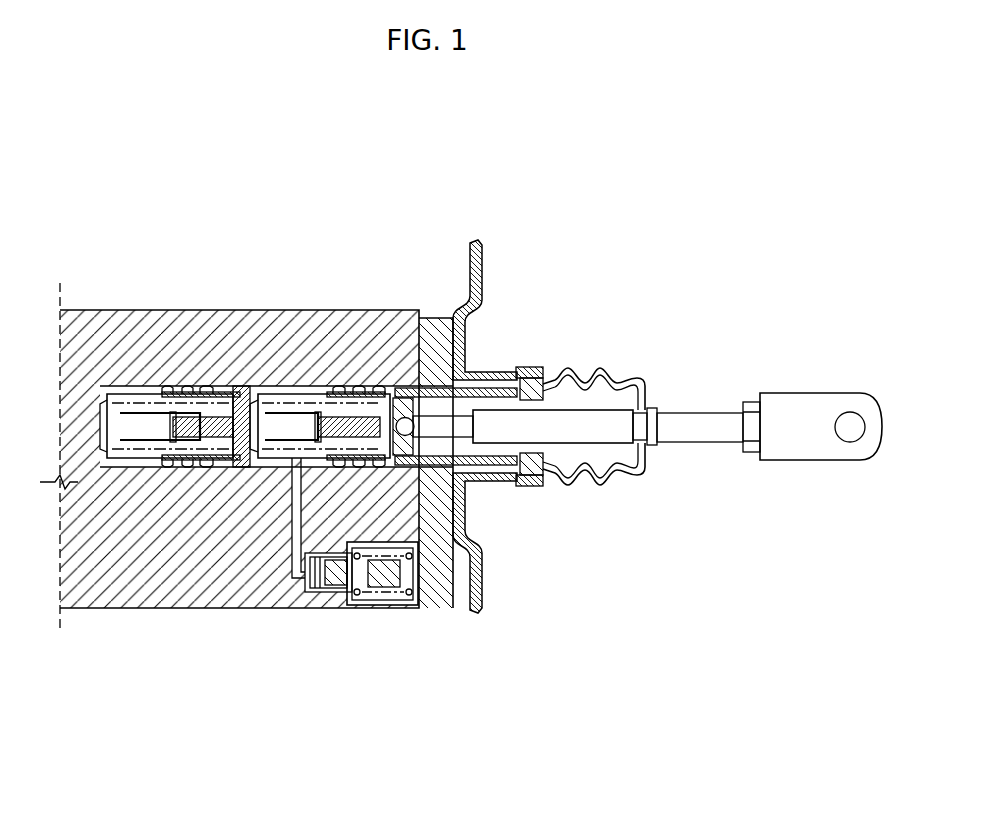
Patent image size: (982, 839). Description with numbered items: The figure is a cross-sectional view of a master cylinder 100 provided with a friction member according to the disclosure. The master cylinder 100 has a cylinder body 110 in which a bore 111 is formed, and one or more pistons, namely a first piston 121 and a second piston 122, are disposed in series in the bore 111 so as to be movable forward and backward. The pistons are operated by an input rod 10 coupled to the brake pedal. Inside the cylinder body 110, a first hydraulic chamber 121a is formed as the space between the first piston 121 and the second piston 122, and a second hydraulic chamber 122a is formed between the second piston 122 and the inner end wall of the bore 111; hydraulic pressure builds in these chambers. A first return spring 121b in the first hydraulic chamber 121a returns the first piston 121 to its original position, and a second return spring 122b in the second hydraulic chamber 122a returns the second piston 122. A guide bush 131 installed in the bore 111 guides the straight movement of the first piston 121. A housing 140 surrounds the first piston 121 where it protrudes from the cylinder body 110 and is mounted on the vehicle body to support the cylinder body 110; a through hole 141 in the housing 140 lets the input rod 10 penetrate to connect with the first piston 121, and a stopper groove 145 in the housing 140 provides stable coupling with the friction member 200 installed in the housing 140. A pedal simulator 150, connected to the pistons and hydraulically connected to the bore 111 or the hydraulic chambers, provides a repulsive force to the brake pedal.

The input rod 10 is at (708, 432).
The master cylinder 100 is at (131, 179).
The cylinder body 110 is at (116, 332).
The bore 111 is at (292, 396).
The first piston 121 is at (372, 394).
The first hydraulic chamber 121a is at (288, 458).
The first return spring 121b is at (247, 463).
The second piston 122 is at (240, 392).
The second hydraulic chamber 122a is at (120, 392).
The second return spring 122b is at (122, 462).
The guide bush 131 is at (404, 396).
The housing 140 is at (445, 327).
The through hole 141 is at (547, 392).
The stopper groove 145 is at (522, 368).
The pedal simulator 150 is at (402, 616).
The friction member 200 is at (506, 478).